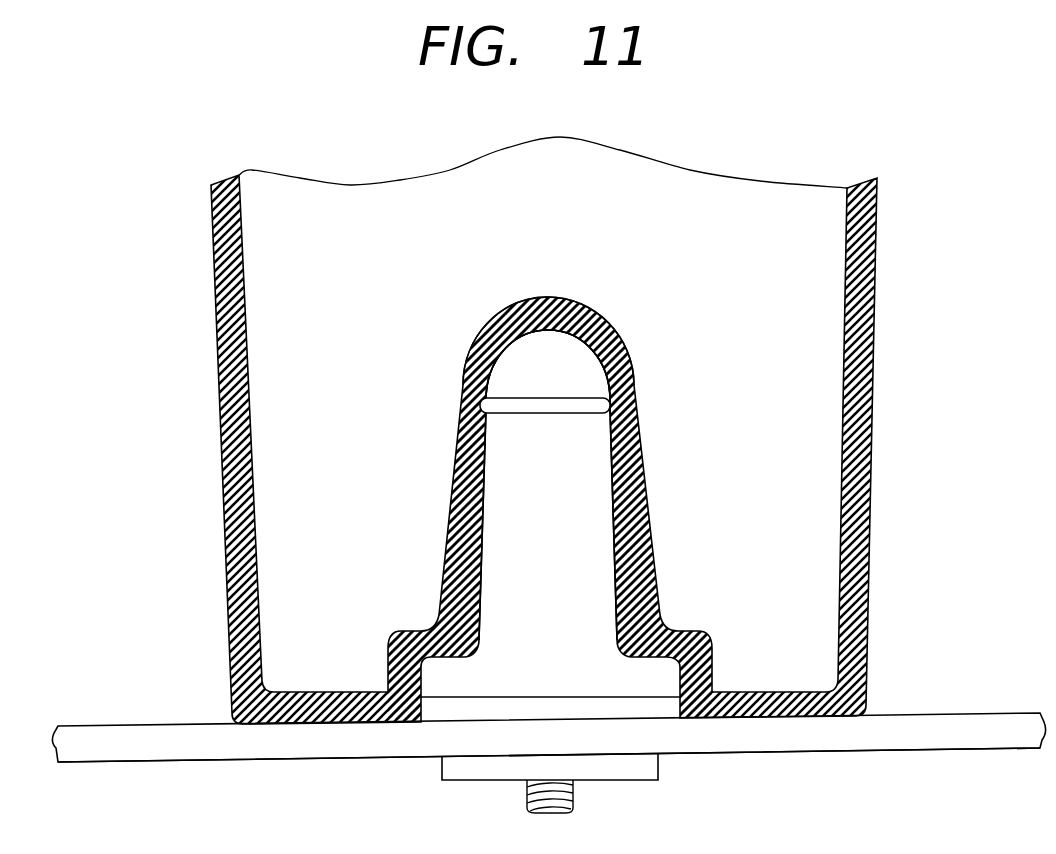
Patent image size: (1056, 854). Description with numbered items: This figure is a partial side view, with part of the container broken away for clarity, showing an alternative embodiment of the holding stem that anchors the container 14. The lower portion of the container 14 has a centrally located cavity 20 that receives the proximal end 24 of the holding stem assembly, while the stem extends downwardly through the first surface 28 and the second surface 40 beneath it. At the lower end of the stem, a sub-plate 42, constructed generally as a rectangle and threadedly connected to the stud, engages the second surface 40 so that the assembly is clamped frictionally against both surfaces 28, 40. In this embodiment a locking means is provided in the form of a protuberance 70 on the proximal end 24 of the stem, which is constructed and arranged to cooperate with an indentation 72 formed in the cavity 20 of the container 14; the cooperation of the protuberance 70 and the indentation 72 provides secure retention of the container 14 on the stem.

The container 14 is at (870, 503).
The centrally located cavity 20 is at (590, 313).
The proximal end 24 is at (507, 493).
The first surface 28 is at (937, 713).
The second surface 40 is at (905, 752).
The sub-plate 42 is at (657, 767).
The protuberance 70 is at (520, 398).
The indentation 72 is at (478, 402).